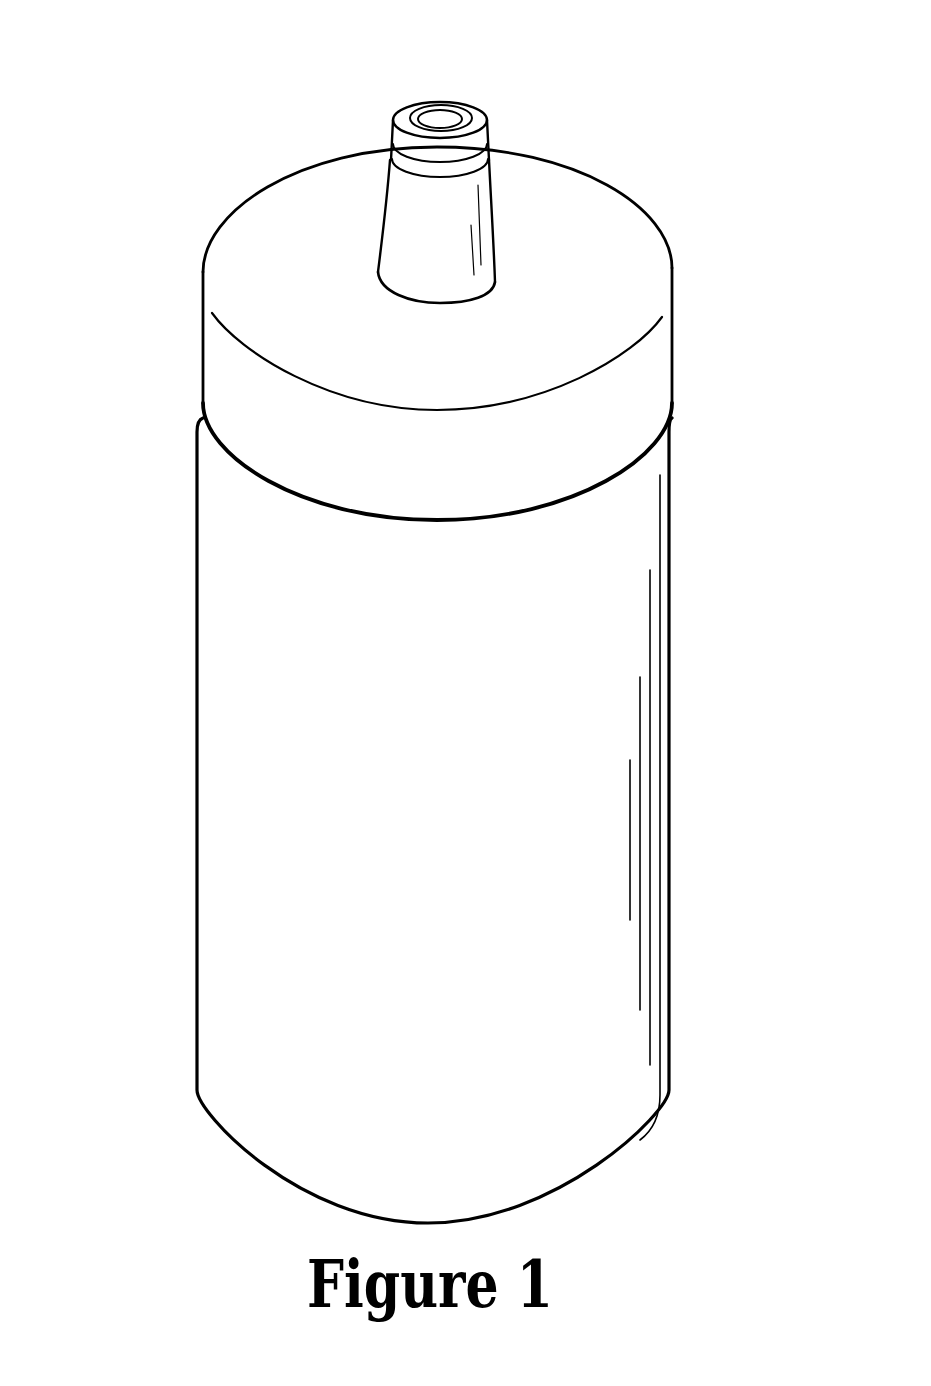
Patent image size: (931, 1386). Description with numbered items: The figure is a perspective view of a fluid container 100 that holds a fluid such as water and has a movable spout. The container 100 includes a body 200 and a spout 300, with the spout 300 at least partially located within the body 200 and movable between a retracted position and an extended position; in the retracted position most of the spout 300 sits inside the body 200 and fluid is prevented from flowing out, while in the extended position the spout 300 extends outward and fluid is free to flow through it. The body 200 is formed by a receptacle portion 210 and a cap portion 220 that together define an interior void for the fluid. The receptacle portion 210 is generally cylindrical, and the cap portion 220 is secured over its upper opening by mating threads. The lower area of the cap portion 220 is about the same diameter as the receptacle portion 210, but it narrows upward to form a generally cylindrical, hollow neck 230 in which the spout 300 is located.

The fluid container 100 is at (196, 158).
The body 200 is at (443, 618).
The receptacle portion 210 is at (669, 766).
The cap portion 220 is at (673, 332).
The neck 230 is at (494, 230).
The spout 300 is at (492, 104).